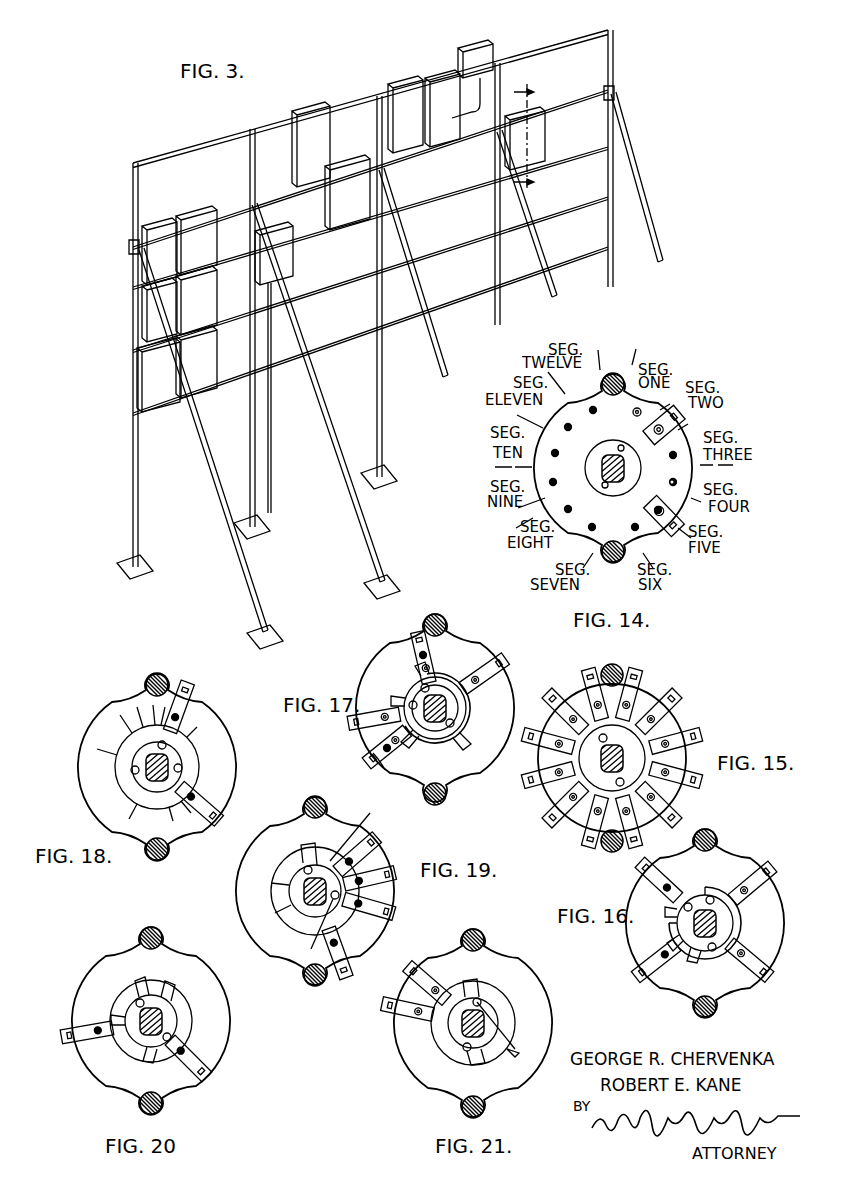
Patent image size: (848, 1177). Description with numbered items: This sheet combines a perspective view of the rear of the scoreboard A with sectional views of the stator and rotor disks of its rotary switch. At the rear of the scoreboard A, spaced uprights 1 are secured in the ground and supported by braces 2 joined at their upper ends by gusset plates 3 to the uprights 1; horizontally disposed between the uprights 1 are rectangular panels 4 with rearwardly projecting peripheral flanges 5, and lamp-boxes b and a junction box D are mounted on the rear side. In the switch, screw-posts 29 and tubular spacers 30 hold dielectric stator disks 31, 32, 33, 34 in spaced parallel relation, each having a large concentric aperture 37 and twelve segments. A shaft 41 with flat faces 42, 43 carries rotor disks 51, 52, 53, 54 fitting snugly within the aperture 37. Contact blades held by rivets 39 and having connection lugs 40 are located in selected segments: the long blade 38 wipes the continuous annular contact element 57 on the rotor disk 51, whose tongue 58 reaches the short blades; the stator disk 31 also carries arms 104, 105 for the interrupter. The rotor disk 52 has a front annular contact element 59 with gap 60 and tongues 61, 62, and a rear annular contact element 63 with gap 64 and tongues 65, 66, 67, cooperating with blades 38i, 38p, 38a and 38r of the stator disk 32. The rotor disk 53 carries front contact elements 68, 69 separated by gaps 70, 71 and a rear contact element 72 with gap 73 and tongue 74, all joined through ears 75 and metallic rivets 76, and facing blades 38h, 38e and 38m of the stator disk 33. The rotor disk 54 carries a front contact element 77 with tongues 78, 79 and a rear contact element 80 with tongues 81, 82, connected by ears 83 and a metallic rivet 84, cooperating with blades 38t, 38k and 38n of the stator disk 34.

In FIG. 3, the uprights 1 is at (613, 205).
In FIG. 3, the braces 2 is at (637, 165).
In FIG. 3, the gusset plates 3 is at (616, 91).
In FIG. 3, the rectangular panels 4 is at (385, 318).
In FIG. 3, the peripheral flanges 5 is at (533, 140).
In FIG. 3, the scoreboard A is at (511, 44).
In FIG. 3, the lamp-boxes b is at (168, 222).
In FIG. 3, the junction box D is at (294, 262).
In FIG. 15, the screw-posts 29 is at (606, 759).
In FIG. 18, the screw-posts 29 is at (164, 677).
In FIG. 16, the screw-posts 29 is at (704, 926).
In FIG. 20, the screw-posts 29 is at (149, 1022).
In FIG. 21, the screw-posts 29 is at (485, 940).
In FIG. 17, the tubular spacers 30 is at (436, 709).
In FIG. 18, the tubular spacers 30 is at (157, 856).
In FIG. 16, the tubular spacers 30 is at (721, 1007).
In FIG. 20, the tubular spacers 30 is at (161, 1012).
In FIG. 21, the tubular spacers 30 is at (456, 1107).
In FIG. 14, the stator disk 31 is at (632, 481).
In FIG. 15, the stator disk 31 is at (622, 758).
In FIG. 17, the stator disk 32 is at (435, 705).
In FIG. 16, the stator disk 32 is at (705, 923).
In FIG. 18, the stator disk 33 is at (157, 767).
In FIG. 19, the stator disk 33 is at (320, 891).
In FIG. 20, the stator disk 34 is at (161, 1021).
In FIG. 21, the stator disk 34 is at (484, 1023).
In FIG. 14, the concentric aperture 37 is at (614, 433).
In FIG. 17, the concentric aperture 37 is at (374, 787).
In FIG. 18, the concentric aperture 37 is at (151, 717).
In FIG. 19, the concentric aperture 37 is at (356, 834).
In FIG. 15, the contact blade 38 is at (613, 746).
In FIG. 17, the contact blade 38 is at (385, 762).
In FIG. 18, the contact blade 38 is at (210, 749).
In FIG. 19, the contact blade 38 is at (391, 884).
In FIG. 16, the contact blade 38 is at (701, 971).
In FIG. 20, the contact blade 38 is at (196, 1073).
In FIG. 17, the contact blade 38a is at (419, 639).
In FIG. 17, the contact blade 38p is at (501, 667).
In FIG. 16, the contact blade 38p is at (642, 880).
In FIG. 17, the contact blade 38r is at (352, 725).
In FIG. 19, the contact blade 38e is at (379, 854).
In FIG. 19, the contact blade 38h is at (389, 909).
In FIG. 19, the contact blade 38m is at (345, 964).
In FIG. 16, the contact blade 38i is at (767, 878).
In FIG. 20, the contact blade 38t is at (82, 1051).
In FIG. 21, the contact blade 38k is at (427, 971).
In FIG. 21, the contact blade 38n is at (396, 1019).
In FIG. 17, the rivets 39 is at (435, 695).
In FIG. 17, the connection lugs 40 is at (378, 694).
In FIG. 14, the shaft 41 is at (600, 472).
In FIG. 15, the shaft 41 is at (566, 761).
In FIG. 17, the shaft 41 is at (459, 711).
In FIG. 18, the shaft 41 is at (184, 769).
In FIG. 19, the shaft 41 is at (294, 897).
In FIG. 16, the shaft 41 is at (730, 926).
In FIG. 20, the shaft 41 is at (153, 1022).
In FIG. 21, the shaft 41 is at (447, 1026).
In FIG. 20, the flat face 42 is at (167, 1021).
In FIG. 20, the flat face 43 is at (137, 1033).
In FIG. 14, the rotor disk 51 is at (603, 466).
In FIG. 15, the rotor disk 51 is at (628, 730).
In FIG. 17, the rotor disk 52 is at (454, 709).
In FIG. 16, the rotor disk 52 is at (743, 923).
In FIG. 18, the rotor disk 53 is at (145, 814).
In FIG. 19, the rotor disk 53 is at (300, 891).
In FIG. 20, the rotor disk 54 is at (186, 988).
In FIG. 21, the rotor disk 54 is at (500, 1014).
In FIG. 15, the annular contact element 57 is at (575, 822).
In FIG. 15, the contact tongue 58 is at (593, 677).
In FIG. 16, the annular contact element 59 is at (657, 913).
In FIG. 16, the gap 60 is at (705, 911).
In FIG. 16, the contact tongue 61 is at (676, 983).
In FIG. 16, the contact tongue 62 is at (642, 953).
In FIG. 17, the annular contact element 63 is at (437, 723).
In FIG. 17, the gap 64 is at (402, 673).
In FIG. 17, the contact tongue 65 is at (382, 705).
In FIG. 17, the contact tongue 66 is at (411, 753).
In FIG. 17, the contact tongue 67 is at (471, 747).
In FIG. 18, the annular contact element 68 is at (188, 767).
In FIG. 18, the annular contact element 69 is at (88, 783).
In FIG. 18, the gap 70 is at (206, 770).
In FIG. 18, the gap 71 is at (125, 720).
In FIG. 19, the annular contact element 72 is at (313, 906).
In FIG. 19, the gap 73 is at (322, 846).
In FIG. 19, the contact tongue 74 is at (274, 878).
In FIG. 18, the ears 75 is at (147, 752).
In FIG. 19, the ears 75 is at (329, 880).
In FIG. 18, the metallic rivets 76 is at (135, 767).
In FIG. 19, the metallic rivets 76 is at (317, 930).
In FIG. 20, the annular contact element 77 is at (106, 1014).
In FIG. 20, the contact tongue 78 is at (164, 1065).
In FIG. 20, the contact tongue 79 is at (133, 978).
In FIG. 21, the annular contact element 80 is at (489, 1065).
In FIG. 21, the contact tongue 81 is at (462, 1039).
In FIG. 21, the contact tongue 82 is at (486, 1023).
In FIG. 21, the ears 83 is at (465, 1028).
In FIG. 21, the metallic rivet 84 is at (520, 1058).
In FIG. 14, the arm 104 is at (652, 515).
In FIG. 14, the arm 105 is at (664, 433).